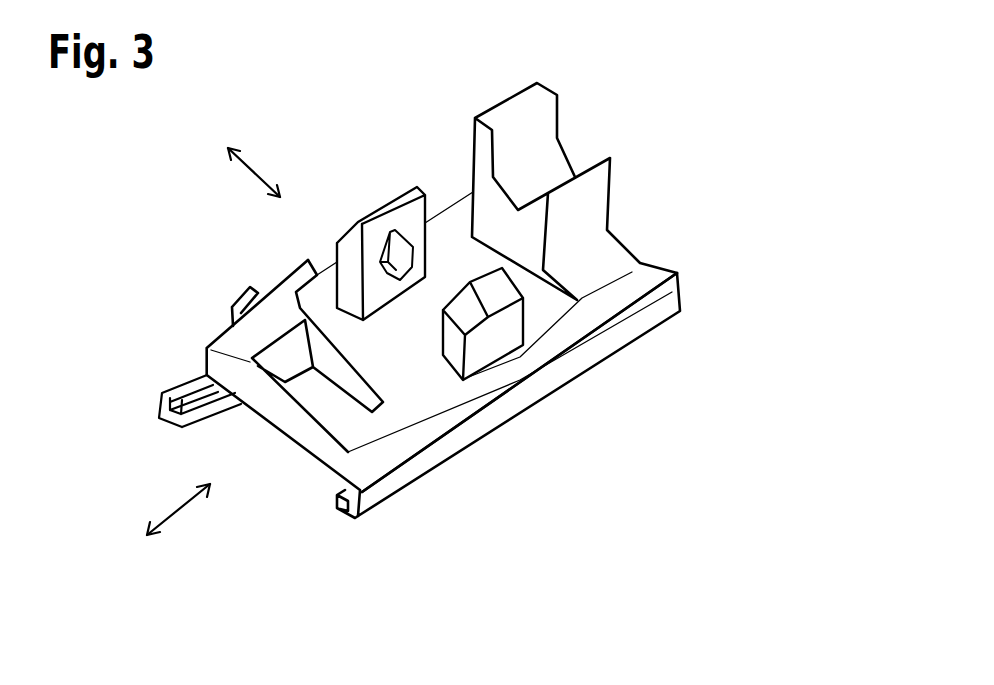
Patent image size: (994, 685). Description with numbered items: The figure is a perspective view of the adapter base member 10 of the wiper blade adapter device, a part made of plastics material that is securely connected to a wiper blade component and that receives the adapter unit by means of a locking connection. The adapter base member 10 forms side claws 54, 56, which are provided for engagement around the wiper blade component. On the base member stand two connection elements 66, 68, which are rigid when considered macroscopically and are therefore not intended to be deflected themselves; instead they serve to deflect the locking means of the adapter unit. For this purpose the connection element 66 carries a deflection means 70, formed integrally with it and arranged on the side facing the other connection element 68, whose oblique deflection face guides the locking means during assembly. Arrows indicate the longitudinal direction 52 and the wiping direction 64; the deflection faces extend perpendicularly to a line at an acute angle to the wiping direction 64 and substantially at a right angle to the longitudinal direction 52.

The adapter base member 10 is at (658, 305).
The longitudinal direction 52 is at (183, 536).
The side claw 54 is at (470, 417).
The side claw 56 is at (177, 390).
The wiping direction 64 is at (250, 172).
The connection element 66 is at (375, 232).
The connection element 68 is at (492, 335).
The deflection means 70 is at (407, 247).